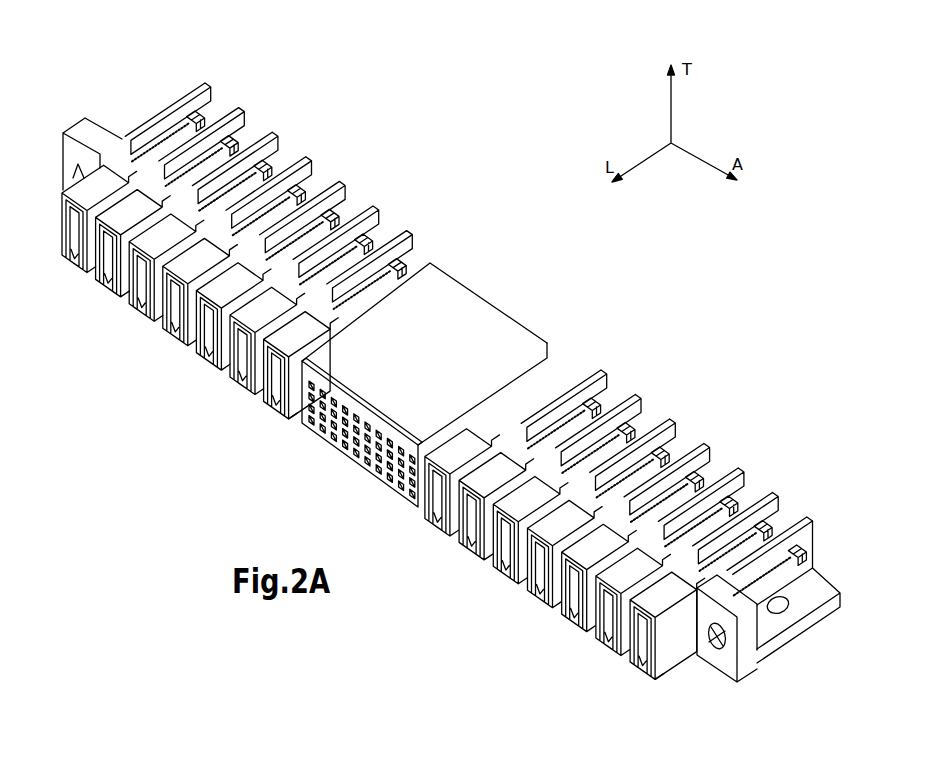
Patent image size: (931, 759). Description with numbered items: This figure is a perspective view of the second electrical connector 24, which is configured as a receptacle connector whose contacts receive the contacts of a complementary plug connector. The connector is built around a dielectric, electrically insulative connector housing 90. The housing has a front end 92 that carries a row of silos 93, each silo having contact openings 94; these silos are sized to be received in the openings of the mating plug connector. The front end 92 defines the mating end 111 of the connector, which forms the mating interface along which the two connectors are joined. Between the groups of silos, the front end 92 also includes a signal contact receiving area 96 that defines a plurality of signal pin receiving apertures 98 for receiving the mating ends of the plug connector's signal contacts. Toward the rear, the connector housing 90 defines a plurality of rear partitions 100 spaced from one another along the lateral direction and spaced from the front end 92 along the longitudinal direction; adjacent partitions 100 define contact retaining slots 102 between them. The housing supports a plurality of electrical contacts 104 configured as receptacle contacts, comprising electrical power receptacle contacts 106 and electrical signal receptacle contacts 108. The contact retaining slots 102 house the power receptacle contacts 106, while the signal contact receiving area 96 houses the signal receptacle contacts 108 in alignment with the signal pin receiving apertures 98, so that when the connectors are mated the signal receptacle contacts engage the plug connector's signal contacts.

The second electrical connector 24 is at (540, 303).
The connector housing 90 is at (547, 337).
The front end 92 is at (222, 388).
The silos 93 is at (63, 192).
The contact openings 94 is at (133, 303).
The signal contact receiving area 96 is at (352, 457).
The signal pin receiving apertures 98 is at (304, 424).
The rear partitions 100 is at (241, 108).
The contact retaining slots 102 is at (258, 122).
The electrical contact 104 is at (578, 365).
The electrical power receptacle contact 106 is at (291, 150).
The electrical signal receptacle contact 108 is at (276, 137).
The mating end 111 is at (537, 580).